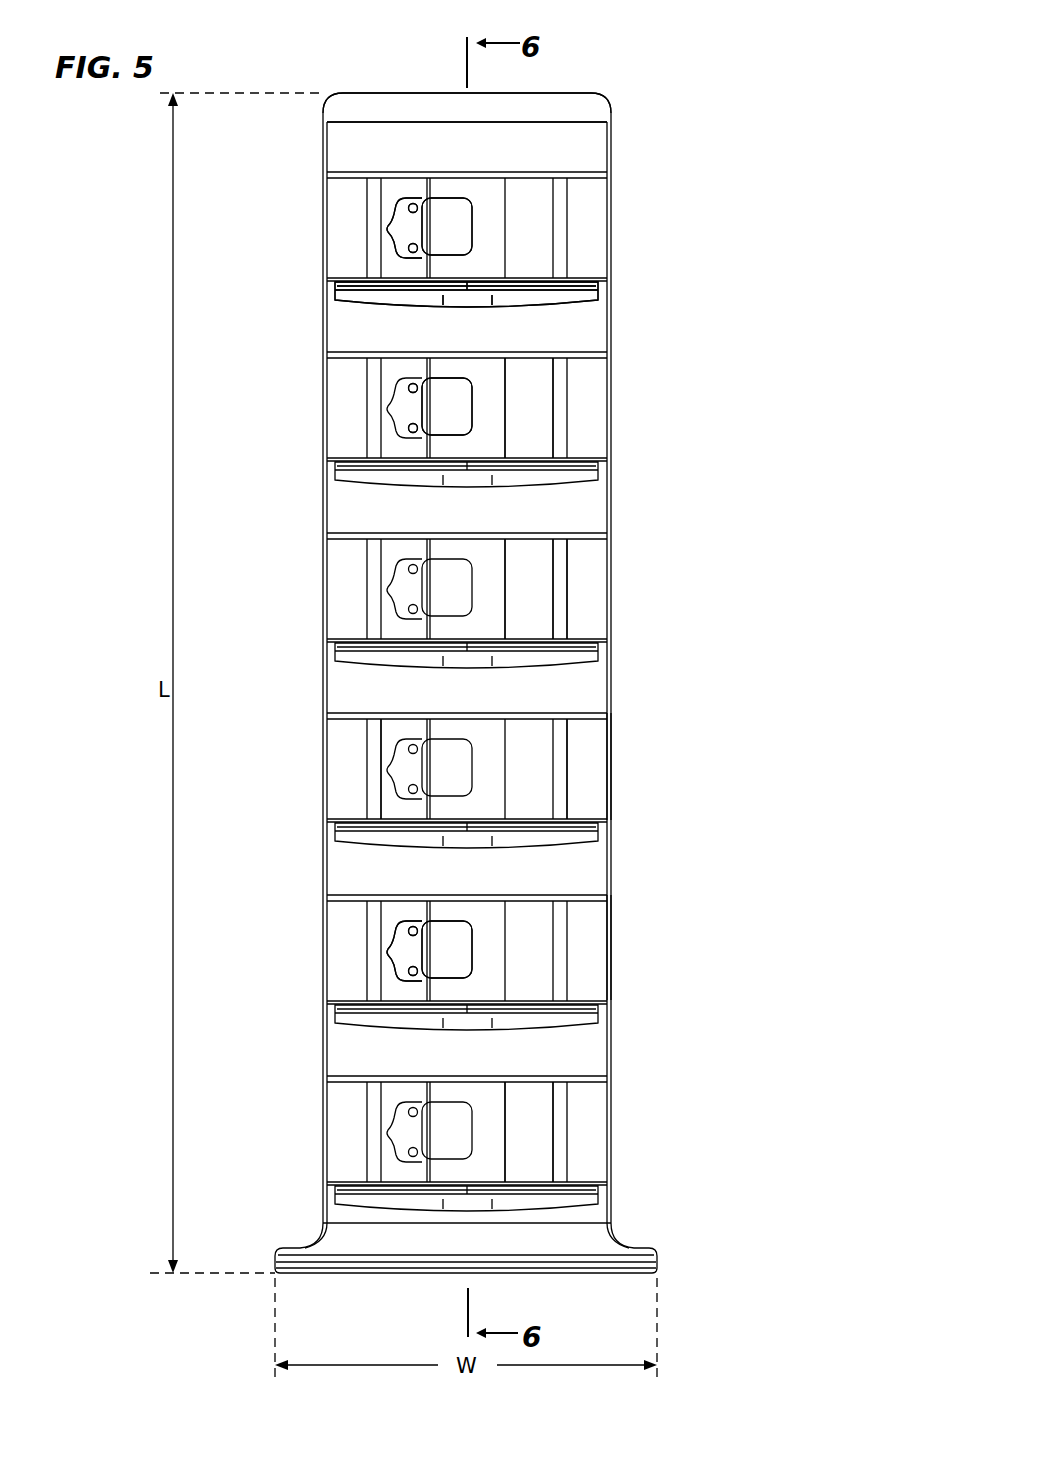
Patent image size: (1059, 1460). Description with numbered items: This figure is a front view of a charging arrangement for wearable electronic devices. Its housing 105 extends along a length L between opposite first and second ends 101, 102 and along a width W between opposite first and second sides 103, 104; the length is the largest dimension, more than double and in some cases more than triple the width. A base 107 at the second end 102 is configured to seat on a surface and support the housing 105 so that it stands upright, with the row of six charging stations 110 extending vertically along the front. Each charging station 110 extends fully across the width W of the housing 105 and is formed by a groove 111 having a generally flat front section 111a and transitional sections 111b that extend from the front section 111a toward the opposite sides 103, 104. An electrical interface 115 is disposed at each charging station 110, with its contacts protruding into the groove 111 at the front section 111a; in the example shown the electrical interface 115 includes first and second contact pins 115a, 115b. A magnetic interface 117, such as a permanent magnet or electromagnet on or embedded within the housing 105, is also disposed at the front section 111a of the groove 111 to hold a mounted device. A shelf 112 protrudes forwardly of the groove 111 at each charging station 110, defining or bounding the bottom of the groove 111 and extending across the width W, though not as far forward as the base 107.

The first end 101 is at (400, 93).
The second end 102 is at (337, 1270).
The first side 103 is at (320, 700).
The second side 104 is at (612, 737).
The housing 105 is at (612, 930).
The base 107 is at (645, 1248).
The charging station 110 is at (590, 196).
The groove 111 is at (527, 437).
The front section 111a is at (530, 566).
The transitional section 111b is at (582, 610).
The shelf 112 is at (522, 284).
The electrical interface 115 is at (407, 207).
The first contact pin 115a is at (408, 388).
The second contact pin 115b is at (408, 428).
The magnetic interface 117 is at (450, 228).